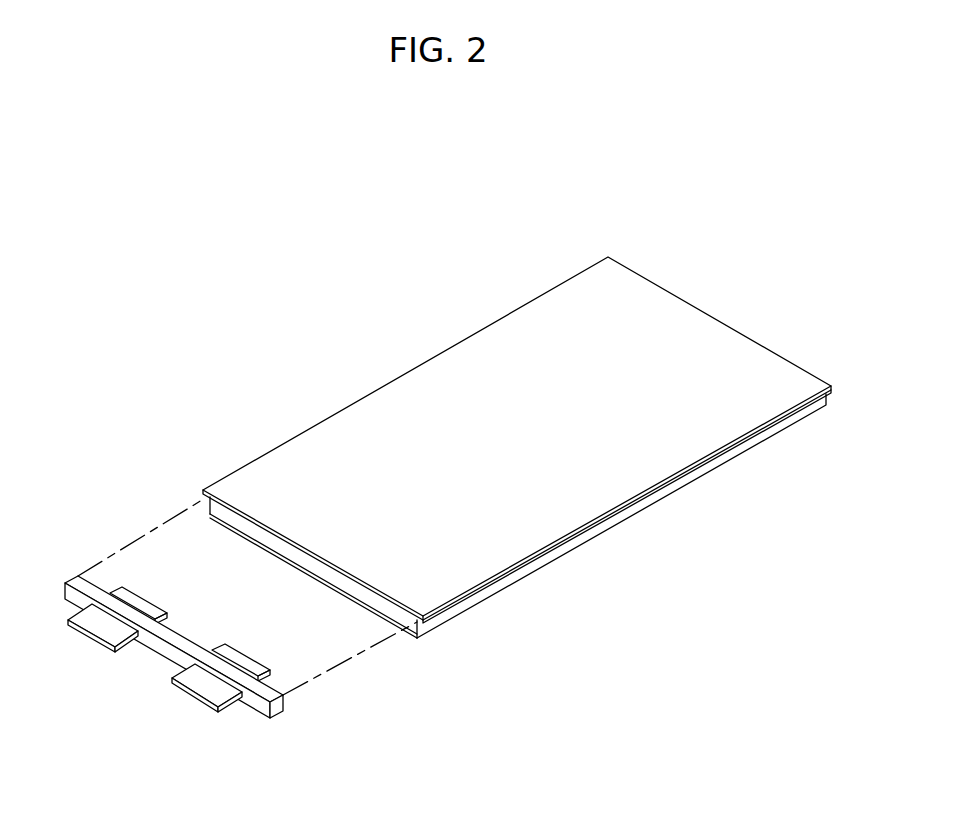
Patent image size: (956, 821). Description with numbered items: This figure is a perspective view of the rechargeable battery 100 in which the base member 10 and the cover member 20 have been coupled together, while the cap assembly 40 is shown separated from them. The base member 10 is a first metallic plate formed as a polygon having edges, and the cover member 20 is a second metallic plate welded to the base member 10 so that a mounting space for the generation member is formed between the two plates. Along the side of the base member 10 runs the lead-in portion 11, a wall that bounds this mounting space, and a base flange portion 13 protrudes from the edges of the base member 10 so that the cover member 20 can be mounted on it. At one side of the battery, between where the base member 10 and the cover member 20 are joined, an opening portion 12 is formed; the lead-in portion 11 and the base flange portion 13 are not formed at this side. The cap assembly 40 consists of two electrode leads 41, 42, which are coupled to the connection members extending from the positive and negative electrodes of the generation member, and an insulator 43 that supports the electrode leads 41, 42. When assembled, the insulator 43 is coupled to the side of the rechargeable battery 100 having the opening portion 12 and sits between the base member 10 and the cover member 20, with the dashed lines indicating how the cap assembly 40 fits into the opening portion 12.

The rechargeable battery 100 is at (302, 308).
The base member 10 is at (702, 492).
The lead-in portion 11 is at (634, 512).
The opening portion 12 is at (250, 548).
The base flange portion 13 is at (200, 497).
The cover member 20 is at (708, 320).
The cap assembly 40 is at (135, 679).
The electrode lead 41 is at (95, 640).
The electrode lead 42 is at (193, 690).
The insulator 43 is at (260, 705).